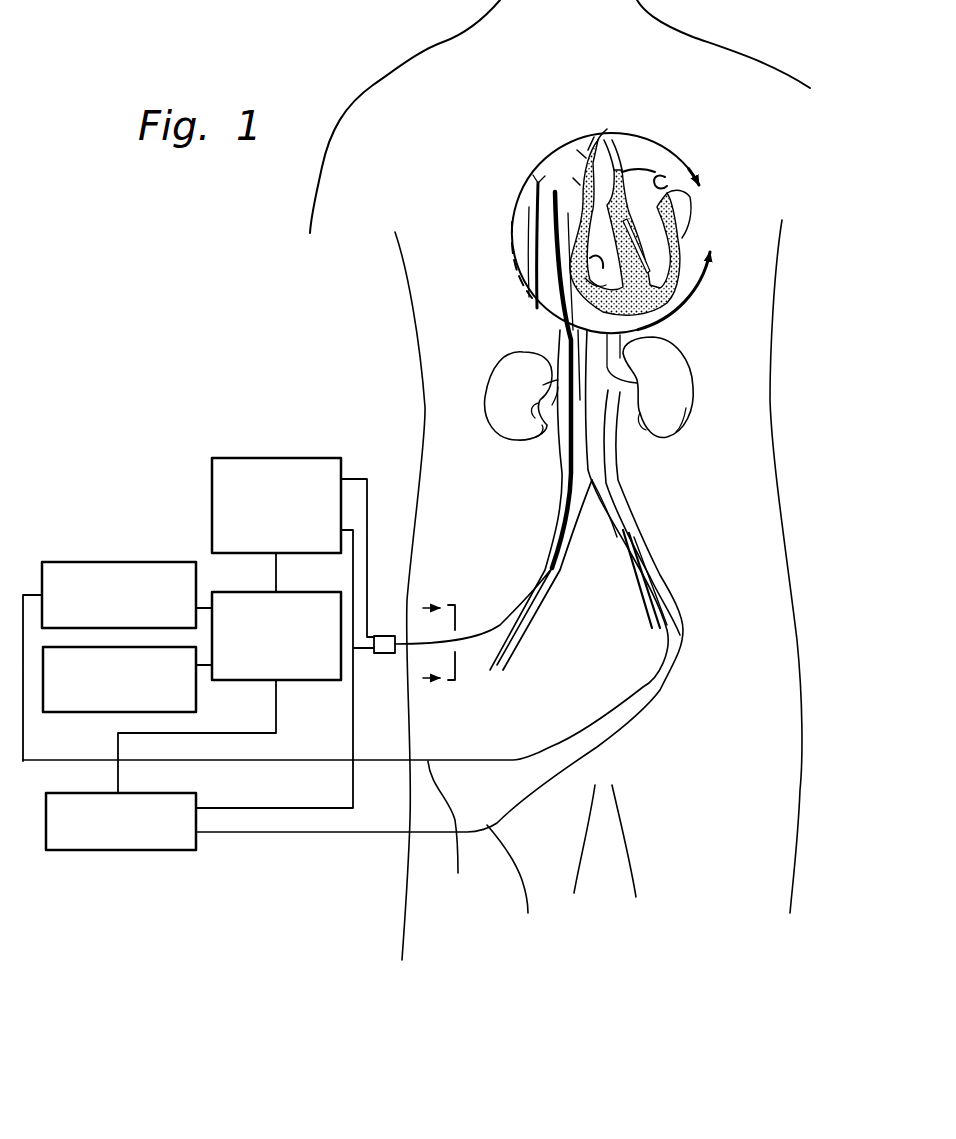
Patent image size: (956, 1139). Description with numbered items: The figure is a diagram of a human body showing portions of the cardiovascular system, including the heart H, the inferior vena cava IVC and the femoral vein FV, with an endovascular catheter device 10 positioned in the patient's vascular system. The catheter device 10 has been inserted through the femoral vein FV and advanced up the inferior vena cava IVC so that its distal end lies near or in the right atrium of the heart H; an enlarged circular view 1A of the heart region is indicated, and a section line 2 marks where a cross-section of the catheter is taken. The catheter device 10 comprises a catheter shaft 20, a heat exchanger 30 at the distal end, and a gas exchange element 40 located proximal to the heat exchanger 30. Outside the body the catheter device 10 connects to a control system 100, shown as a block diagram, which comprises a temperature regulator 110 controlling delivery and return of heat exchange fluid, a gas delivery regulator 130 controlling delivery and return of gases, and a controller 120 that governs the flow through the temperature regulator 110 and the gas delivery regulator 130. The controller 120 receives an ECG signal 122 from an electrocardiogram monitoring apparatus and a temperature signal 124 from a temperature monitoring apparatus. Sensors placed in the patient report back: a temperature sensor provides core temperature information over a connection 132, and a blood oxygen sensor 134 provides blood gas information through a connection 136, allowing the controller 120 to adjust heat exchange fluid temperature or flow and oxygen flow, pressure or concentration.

The endovascular catheter device 10 is at (511, 216).
The catheter shaft 20 is at (553, 335).
The heat exchanger 30 is at (537, 212).
The gas exchange element 40 is at (542, 300).
The control system 100 is at (128, 445).
The temperature regulator 110 is at (297, 450).
The controller 120 is at (217, 584).
The ECG signal 122 is at (107, 720).
The temperature signal 124 is at (96, 550).
The gas delivery regulator 130 is at (151, 858).
The connection 132 is at (457, 836).
The blood oxygen sensor 134 is at (652, 598).
The connection to the controller 136 is at (522, 890).
The section line 2- 2 is at (451, 649).
The heart H is at (686, 168).
The view 1A indicator 1A is at (719, 233).
The inferior vena cava IVC is at (554, 457).
The femoral vein FV is at (520, 648).